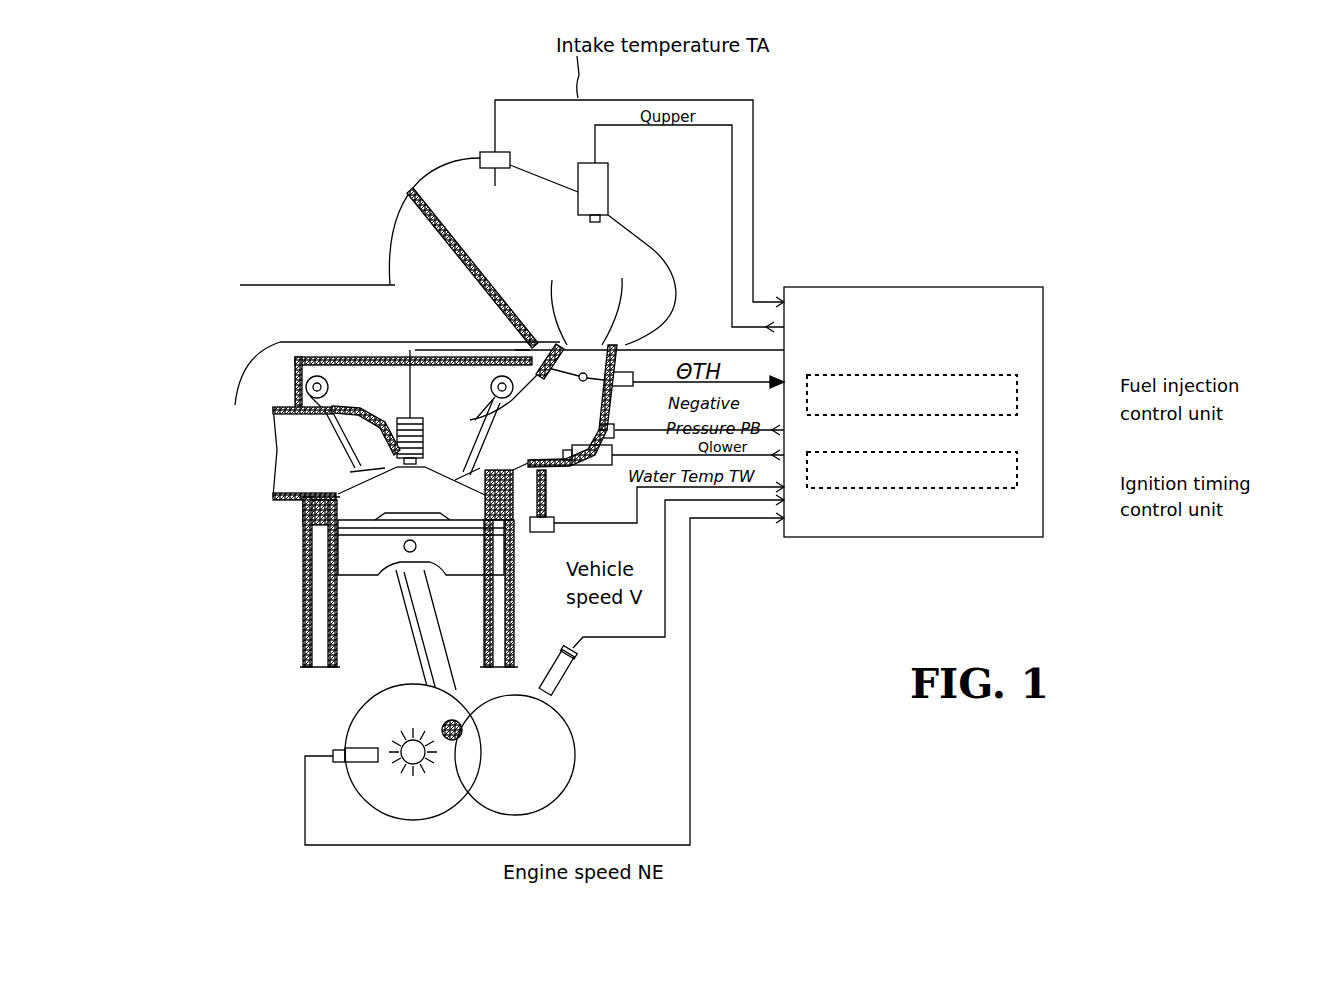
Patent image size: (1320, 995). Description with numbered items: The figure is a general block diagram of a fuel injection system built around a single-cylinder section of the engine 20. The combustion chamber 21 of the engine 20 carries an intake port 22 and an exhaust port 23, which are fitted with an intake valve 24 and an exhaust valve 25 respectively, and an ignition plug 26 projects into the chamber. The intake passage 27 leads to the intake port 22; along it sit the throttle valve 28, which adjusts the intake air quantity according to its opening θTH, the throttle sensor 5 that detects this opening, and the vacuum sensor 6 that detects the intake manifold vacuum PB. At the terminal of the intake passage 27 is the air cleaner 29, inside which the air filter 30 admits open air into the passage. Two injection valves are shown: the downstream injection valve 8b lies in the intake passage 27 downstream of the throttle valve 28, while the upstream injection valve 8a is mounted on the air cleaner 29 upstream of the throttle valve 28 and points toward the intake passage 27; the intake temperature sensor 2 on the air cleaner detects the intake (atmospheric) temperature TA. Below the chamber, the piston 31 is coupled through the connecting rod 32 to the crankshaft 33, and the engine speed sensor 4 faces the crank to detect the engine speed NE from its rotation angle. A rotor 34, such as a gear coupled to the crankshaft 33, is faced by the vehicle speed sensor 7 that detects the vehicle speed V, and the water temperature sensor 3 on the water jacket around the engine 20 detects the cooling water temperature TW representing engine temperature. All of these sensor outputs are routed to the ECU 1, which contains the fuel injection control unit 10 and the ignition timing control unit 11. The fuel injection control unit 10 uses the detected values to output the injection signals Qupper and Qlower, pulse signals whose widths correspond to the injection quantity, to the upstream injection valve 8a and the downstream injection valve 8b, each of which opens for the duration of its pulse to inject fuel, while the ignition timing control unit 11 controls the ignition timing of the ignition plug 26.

The ECU (Engine Control Unit) 1 is at (935, 537).
The intake temperature sensor 2 is at (510, 157).
The water temperature sensor 3 is at (551, 534).
The engine speed sensor 4 is at (340, 750).
The throttle sensor 5 is at (633, 343).
The vacuum sensor 6 is at (616, 426).
The vehicle speed sensor 7 is at (560, 690).
The upstream injection valve 8a is at (608, 190).
The downstream injection valve 8b is at (591, 473).
The fuel injection control unit 10 is at (1017, 395).
The ignition timing control unit 11 is at (1017, 470).
The engine 20 is at (292, 565).
The combustion chamber 21 is at (305, 508).
The intake port 22 is at (547, 492).
The exhaust port 23 is at (328, 496).
The intake valve 24 is at (484, 462).
The exhaust valve 25 is at (355, 471).
The ignition plug 26 is at (418, 418).
The intake passage 27 is at (512, 342).
The throttle valve 28 is at (611, 345).
The air cleaner 29 is at (652, 268).
The air filter 30 is at (452, 238).
The piston 31 is at (357, 571).
The connecting rod 32 is at (420, 605).
The crankshaft 33 is at (403, 762).
The rotor 34 is at (560, 733).